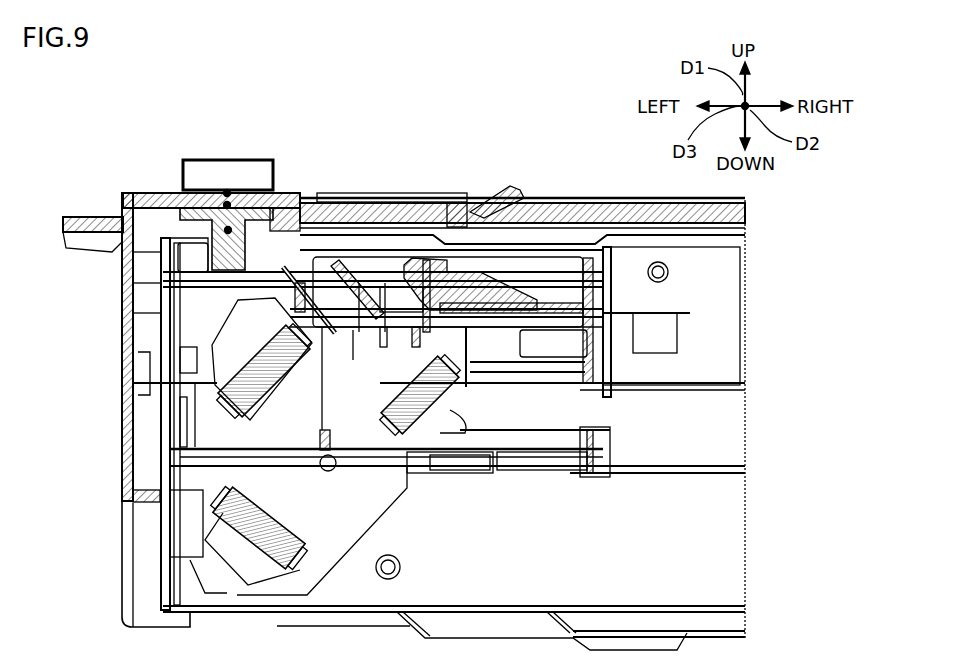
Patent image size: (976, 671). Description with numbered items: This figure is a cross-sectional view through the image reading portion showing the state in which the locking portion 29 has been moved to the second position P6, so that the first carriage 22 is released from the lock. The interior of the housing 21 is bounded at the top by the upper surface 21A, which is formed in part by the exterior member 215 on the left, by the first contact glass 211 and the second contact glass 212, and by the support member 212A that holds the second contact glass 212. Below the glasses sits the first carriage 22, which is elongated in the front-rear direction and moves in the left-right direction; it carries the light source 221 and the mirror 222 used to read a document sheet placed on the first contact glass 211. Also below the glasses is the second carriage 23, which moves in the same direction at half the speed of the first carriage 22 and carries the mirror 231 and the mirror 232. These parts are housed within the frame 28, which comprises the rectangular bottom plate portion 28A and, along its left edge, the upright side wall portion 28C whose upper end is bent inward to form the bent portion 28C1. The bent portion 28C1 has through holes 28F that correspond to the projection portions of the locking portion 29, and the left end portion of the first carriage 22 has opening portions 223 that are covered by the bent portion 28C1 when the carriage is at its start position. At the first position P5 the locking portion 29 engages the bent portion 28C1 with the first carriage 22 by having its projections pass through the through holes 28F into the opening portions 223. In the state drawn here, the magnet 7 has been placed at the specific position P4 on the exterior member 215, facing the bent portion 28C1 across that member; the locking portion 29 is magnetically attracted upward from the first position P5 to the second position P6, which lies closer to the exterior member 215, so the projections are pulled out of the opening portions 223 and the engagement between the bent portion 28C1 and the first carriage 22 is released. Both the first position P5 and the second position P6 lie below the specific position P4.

The housing 21 is at (118, 115).
The upper surface 21A is at (612, 180).
The magnet 7 is at (225, 159).
The second position P6 is at (227, 190).
The specific position P4 is at (228, 203).
The first position P5 is at (235, 232).
The exterior member 215 is at (300, 192).
The second contact glass 212 is at (372, 194).
The support member 212A is at (488, 192).
The light source 221 is at (430, 244).
The first contact glass 211 is at (586, 200).
The locking portion 29 is at (172, 222).
The bent portion 28C1 is at (166, 232).
The through holes 28F is at (201, 253).
The opening portions 223 is at (216, 282).
The first carriage 22 is at (613, 362).
The mirror 222 is at (450, 395).
The mirror 231 is at (275, 388).
The mirror 232 is at (273, 511).
The second carriage 23 is at (403, 507).
The side wall portion 28C is at (160, 523).
The frame 28 is at (150, 557).
The bottom plate portion 28A is at (515, 606).